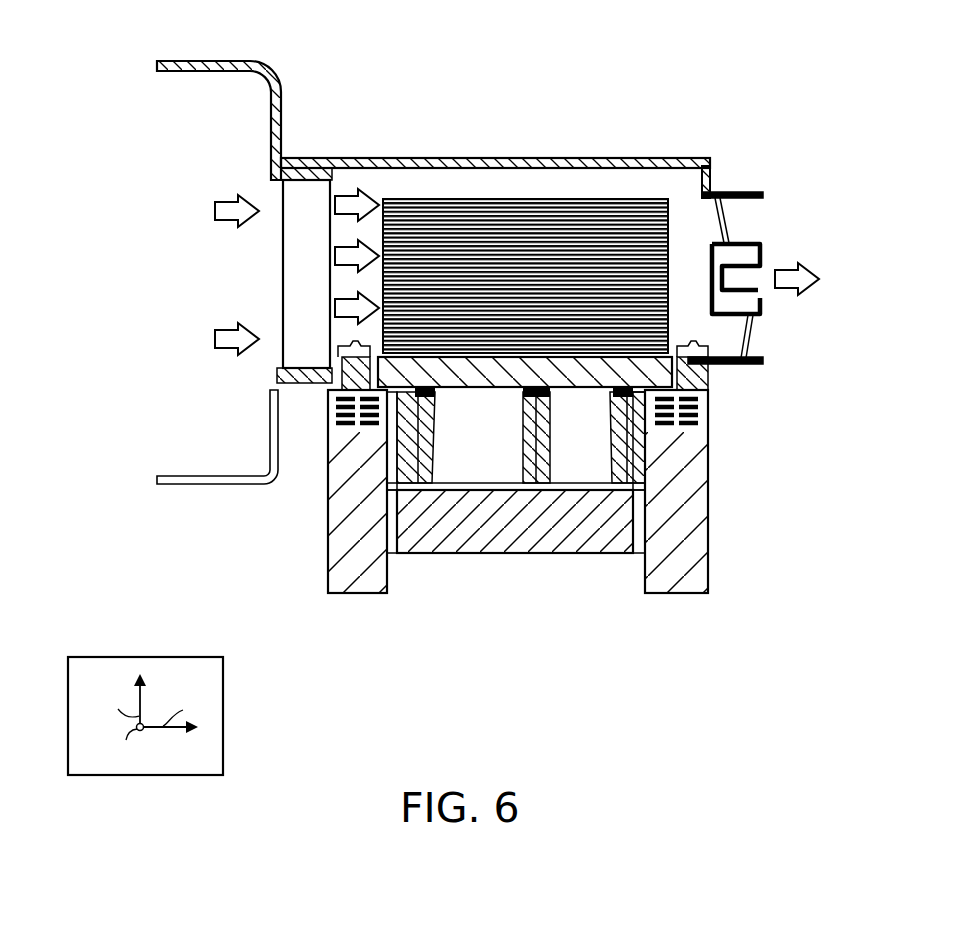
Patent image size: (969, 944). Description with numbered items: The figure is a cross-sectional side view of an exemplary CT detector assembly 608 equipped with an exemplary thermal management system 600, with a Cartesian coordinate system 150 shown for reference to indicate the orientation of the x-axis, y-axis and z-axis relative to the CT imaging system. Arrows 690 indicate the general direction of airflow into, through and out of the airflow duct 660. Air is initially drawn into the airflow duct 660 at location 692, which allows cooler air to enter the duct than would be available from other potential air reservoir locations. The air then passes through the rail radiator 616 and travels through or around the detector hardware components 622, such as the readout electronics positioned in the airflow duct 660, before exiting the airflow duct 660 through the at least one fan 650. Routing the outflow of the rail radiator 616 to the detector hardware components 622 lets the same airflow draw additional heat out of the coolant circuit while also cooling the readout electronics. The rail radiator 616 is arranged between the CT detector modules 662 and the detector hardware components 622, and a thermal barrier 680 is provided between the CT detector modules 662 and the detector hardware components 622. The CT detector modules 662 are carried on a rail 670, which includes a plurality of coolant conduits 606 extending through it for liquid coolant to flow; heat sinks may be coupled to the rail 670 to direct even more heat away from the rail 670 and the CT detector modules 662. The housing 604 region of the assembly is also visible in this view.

The Cartesian coordinate system 150 is at (113, 657).
The thermal management system 600 is at (158, 218).
The housing 604 is at (592, 376).
The coolant conduits 606 is at (345, 433).
The CT detector assembly 608 is at (100, 67).
The rail radiator 616 is at (295, 287).
The detector hardware components 622 is at (668, 240).
The fan 650 is at (784, 313).
The airflow duct 660 is at (554, 185).
The CT detector modules 662 is at (542, 476).
The rail 670 is at (355, 574).
The thermal barrier 680 is at (380, 347).
The arrows 690 is at (230, 201).
The location 692 is at (268, 353).